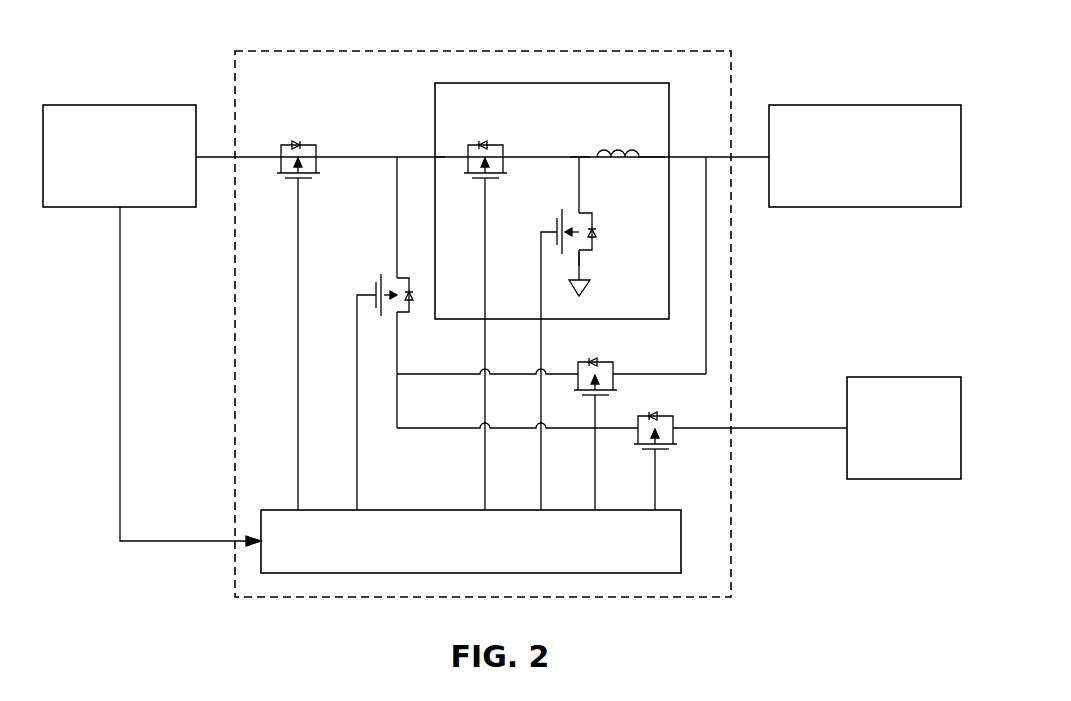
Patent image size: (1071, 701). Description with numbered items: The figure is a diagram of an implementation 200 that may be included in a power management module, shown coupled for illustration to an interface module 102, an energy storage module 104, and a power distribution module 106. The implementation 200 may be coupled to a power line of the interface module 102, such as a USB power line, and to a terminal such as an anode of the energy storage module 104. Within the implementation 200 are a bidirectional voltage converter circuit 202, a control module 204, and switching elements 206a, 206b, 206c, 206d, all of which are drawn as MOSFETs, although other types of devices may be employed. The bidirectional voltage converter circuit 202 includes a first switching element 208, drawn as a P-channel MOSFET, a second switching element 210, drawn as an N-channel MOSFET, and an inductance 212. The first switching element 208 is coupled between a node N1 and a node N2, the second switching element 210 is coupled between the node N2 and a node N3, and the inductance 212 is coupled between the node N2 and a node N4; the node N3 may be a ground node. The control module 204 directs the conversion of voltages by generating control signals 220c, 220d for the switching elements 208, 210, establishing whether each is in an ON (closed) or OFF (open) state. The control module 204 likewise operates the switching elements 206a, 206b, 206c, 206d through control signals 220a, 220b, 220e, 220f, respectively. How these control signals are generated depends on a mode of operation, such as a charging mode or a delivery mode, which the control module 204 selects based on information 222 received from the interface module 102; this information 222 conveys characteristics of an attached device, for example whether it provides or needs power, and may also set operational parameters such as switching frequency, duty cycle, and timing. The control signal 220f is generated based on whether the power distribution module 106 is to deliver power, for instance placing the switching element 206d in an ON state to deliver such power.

The interface module 102 is at (180, 104).
The energy storage module 104 is at (897, 104).
The power distribution module 106 is at (909, 376).
The implementation 200 is at (731, 72).
The bidirectional voltage converter circuit 202 is at (625, 84).
The control module 204 is at (681, 522).
The switching element 206a is at (314, 146).
The switching element 206b is at (393, 279).
The switching element 206c is at (612, 363).
The switching element 206d is at (672, 417).
The first switching element 208 is at (502, 146).
The second switching element 210 is at (592, 214).
The inductance 212 is at (612, 152).
The control signal 220a is at (298, 490).
The control signal 220b is at (357, 490).
The control signal 220c is at (485, 490).
The control signal 220d is at (541, 490).
The control signal 220e is at (595, 490).
The control signal 220f is at (655, 490).
The information 222 is at (120, 300).
The node N1 is at (436, 160).
The node N2 is at (557, 158).
The node N3 is at (580, 256).
The node N4 is at (660, 158).